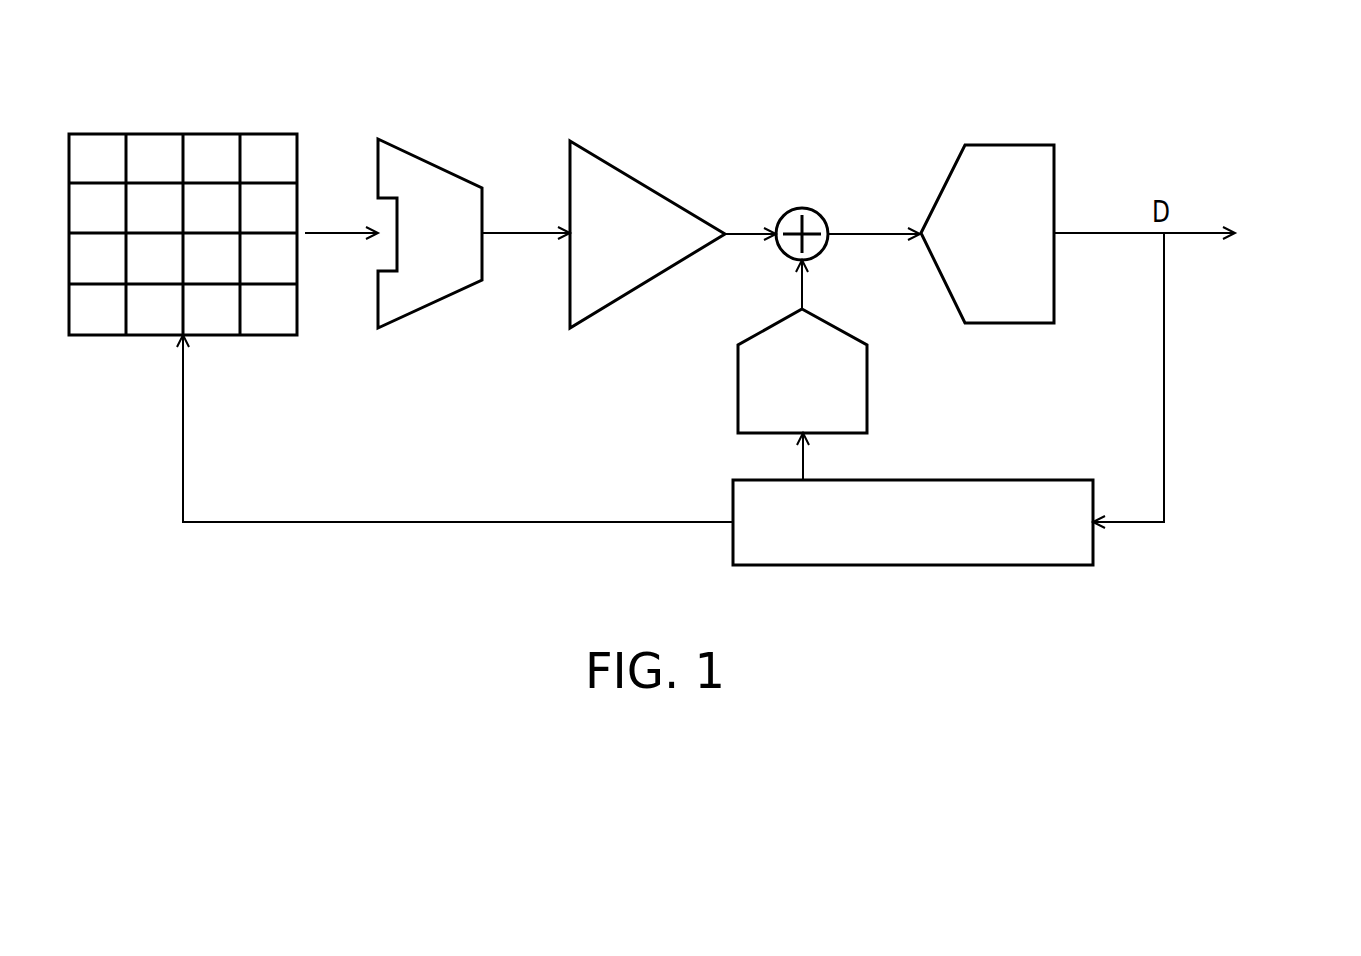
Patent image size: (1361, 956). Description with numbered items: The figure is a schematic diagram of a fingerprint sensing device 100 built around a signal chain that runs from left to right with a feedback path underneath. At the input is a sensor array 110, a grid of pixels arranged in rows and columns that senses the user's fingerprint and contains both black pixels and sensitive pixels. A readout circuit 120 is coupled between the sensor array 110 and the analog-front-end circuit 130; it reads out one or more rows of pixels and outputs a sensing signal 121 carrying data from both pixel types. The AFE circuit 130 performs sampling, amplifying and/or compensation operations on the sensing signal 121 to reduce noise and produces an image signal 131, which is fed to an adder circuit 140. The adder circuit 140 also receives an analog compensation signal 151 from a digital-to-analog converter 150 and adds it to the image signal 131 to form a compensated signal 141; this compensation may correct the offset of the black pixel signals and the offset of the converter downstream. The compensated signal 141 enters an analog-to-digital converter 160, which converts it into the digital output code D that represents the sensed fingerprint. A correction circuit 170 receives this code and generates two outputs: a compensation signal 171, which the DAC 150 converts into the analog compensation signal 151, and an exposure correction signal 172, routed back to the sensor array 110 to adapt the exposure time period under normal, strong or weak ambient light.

The fingerprint sensing device 100 is at (1335, 609).
The sensor array 110 is at (204, 134).
The readout circuit 120 is at (408, 147).
The sensing signal 121 is at (522, 236).
The analog-front-end (AFE) circuit 130 is at (613, 162).
The image signal 131 is at (747, 237).
The adder circuit 140 is at (806, 207).
The compensated signal 141 is at (875, 232).
The digital-to-analog converter (DAC) 150 is at (738, 390).
The analog compensation signal 151 is at (805, 292).
The analog-to-digital converter (ADC) 160 is at (1012, 145).
The correction circuit 170 is at (997, 480).
The compensation signal 171 is at (805, 467).
The exposure correction signal 172 is at (582, 520).